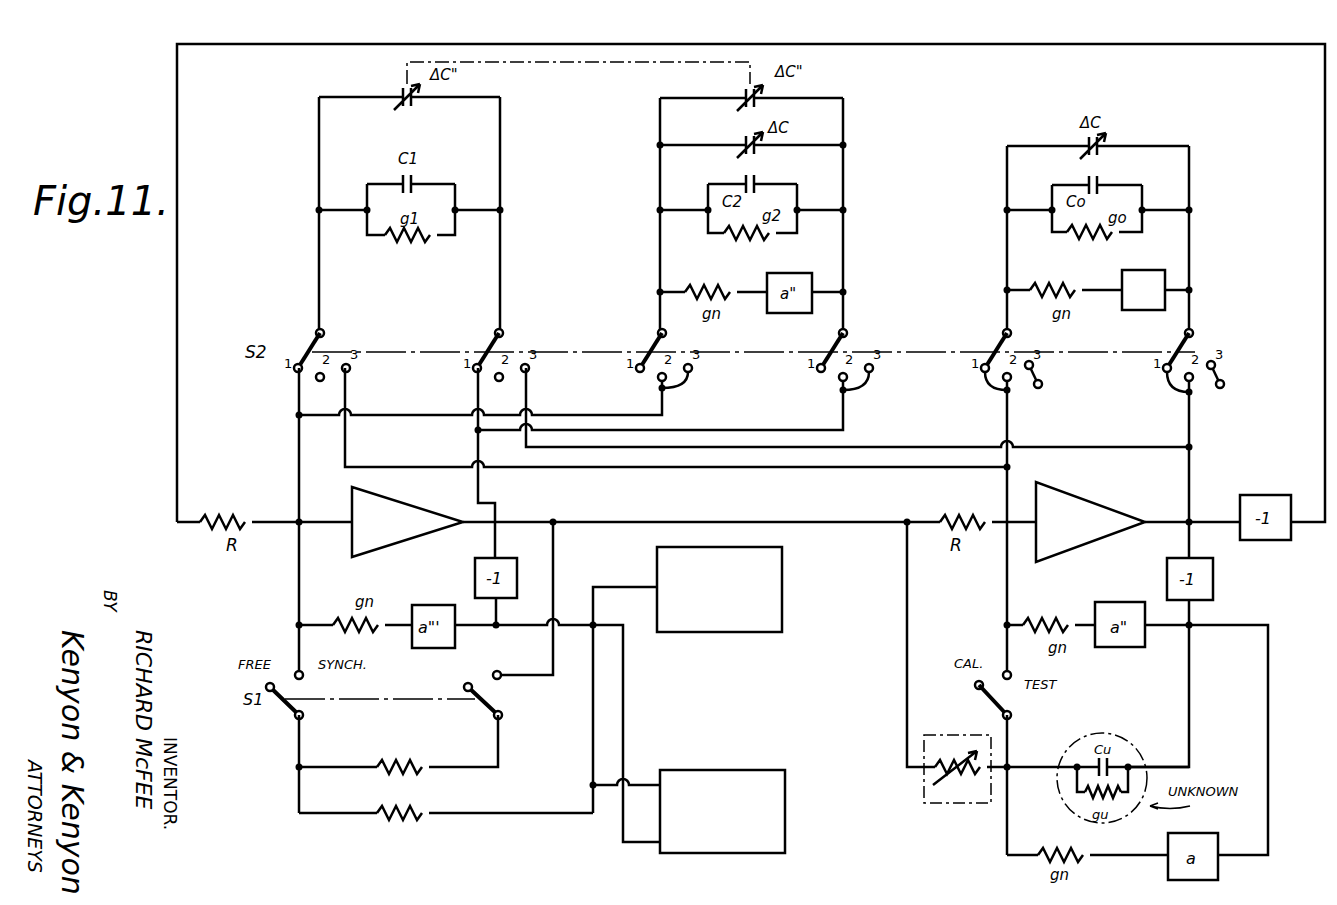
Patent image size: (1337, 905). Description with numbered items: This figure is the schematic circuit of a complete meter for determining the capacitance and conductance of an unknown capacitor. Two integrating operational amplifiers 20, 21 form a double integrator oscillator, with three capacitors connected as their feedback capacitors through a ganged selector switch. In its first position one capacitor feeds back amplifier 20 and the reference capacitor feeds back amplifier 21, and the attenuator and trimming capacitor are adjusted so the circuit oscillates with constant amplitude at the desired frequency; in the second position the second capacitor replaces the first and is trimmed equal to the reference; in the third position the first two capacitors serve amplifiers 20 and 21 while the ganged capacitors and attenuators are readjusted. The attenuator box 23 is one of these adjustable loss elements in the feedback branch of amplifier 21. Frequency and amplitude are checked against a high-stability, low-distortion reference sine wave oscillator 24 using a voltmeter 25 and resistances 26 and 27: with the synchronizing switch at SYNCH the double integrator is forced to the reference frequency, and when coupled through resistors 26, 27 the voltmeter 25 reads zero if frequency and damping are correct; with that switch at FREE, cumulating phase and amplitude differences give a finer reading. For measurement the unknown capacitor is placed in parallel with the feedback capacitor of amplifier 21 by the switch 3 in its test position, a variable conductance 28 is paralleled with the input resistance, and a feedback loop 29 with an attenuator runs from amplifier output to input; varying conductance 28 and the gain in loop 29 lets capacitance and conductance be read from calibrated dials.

The integrating operational amplifier 20 is at (407, 522).
The integrating operational amplifier 21 is at (1090, 522).
The attenuator a' 23 is at (1150, 268).
The reference sine wave oscillator 24 is at (782, 577).
The voltmeter 25 is at (785, 790).
The resistance 26 is at (432, 809).
The resistance 27 is at (432, 763).
The variable conductance 28 is at (952, 803).
The feedback loop 29 is at (1268, 752).
The calibrate/test switch 3 is at (990, 705).